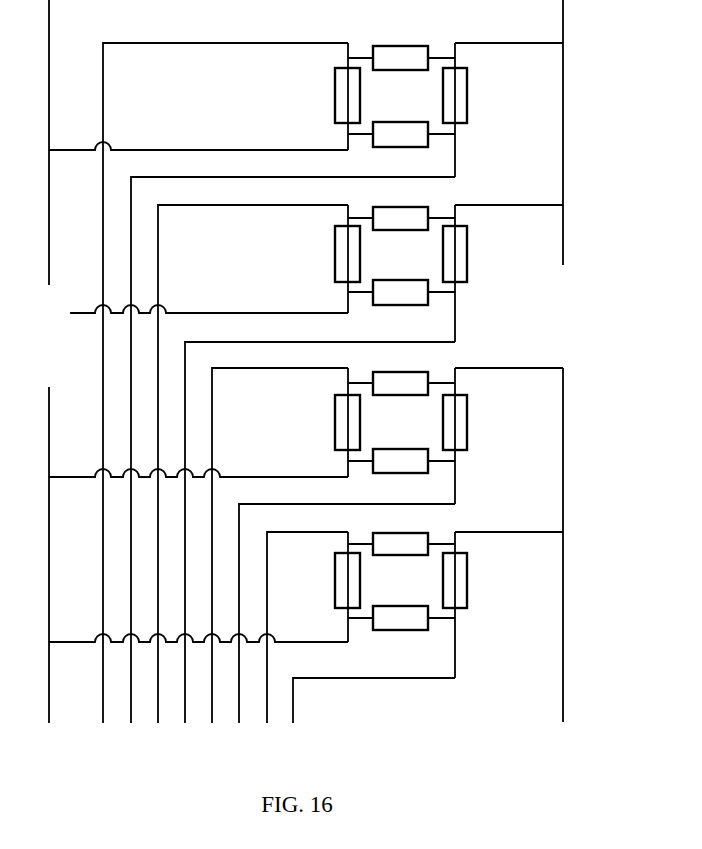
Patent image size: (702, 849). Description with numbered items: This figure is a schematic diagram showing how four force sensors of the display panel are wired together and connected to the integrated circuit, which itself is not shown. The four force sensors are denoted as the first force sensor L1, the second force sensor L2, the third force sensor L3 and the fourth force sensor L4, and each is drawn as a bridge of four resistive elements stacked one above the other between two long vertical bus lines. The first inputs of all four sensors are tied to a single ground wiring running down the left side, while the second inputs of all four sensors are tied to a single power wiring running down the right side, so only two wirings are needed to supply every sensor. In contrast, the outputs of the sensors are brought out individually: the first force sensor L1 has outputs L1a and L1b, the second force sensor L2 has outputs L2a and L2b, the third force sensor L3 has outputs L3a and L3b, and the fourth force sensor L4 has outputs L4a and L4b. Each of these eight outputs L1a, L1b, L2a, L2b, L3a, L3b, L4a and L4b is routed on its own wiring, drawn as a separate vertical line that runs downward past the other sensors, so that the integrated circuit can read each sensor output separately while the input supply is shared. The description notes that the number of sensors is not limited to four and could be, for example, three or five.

The first force sensor L1 is at (401, 110).
The first output of the first force sensor L1a is at (347, 383).
The second output of the first force sensor L1b is at (198, 383).
The second force sensor L2 is at (401, 273).
The first output of the second force sensor L2a is at (374, 464).
The second output of the second force sensor L2b is at (209, 464).
The third force sensor L3 is at (401, 436).
The first output of the third force sensor L3a is at (401, 545).
The second output of the third force sensor L3b is at (198, 545).
The fourth force sensor L4 is at (401, 605).
The first output of the fourth force sensor L4a is at (428, 627).
The second output of the fourth force sensor L4b is at (198, 627).